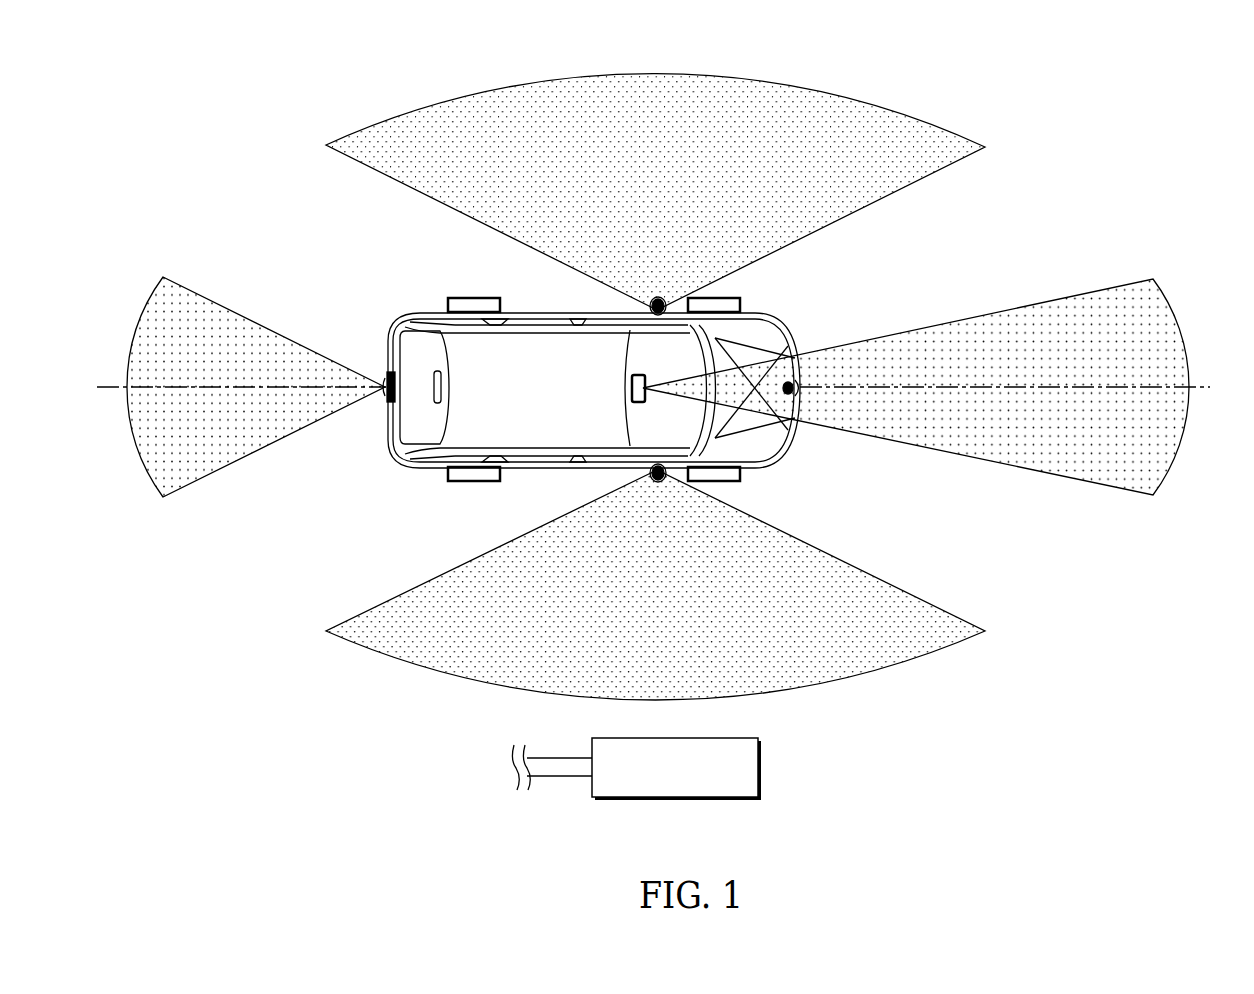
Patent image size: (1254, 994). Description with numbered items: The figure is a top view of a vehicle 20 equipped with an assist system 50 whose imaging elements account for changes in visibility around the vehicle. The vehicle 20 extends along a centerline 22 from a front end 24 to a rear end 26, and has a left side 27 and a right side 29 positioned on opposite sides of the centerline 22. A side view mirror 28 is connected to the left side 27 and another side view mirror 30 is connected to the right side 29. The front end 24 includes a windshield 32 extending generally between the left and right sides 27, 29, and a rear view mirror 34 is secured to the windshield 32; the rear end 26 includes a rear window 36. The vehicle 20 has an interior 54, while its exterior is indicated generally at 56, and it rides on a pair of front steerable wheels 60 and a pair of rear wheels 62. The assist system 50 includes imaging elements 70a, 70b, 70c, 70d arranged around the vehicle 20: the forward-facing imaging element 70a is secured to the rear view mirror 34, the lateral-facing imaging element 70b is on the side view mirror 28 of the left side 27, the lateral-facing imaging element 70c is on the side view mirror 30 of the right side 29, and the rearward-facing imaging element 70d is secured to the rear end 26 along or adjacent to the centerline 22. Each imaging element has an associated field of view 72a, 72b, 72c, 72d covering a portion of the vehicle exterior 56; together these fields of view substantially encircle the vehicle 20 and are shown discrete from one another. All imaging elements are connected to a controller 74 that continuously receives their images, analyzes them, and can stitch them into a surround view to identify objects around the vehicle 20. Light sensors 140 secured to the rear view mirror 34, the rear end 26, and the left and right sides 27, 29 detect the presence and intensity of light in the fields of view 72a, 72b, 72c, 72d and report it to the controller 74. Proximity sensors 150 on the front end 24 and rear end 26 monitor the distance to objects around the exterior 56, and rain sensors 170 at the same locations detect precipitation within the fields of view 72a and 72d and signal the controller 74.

The vehicle 20 is at (438, 270).
The centerline 22 is at (214, 384).
The front end 24 is at (818, 329).
The rear end 26 is at (363, 446).
The left side 27 is at (562, 293).
The side view mirror 28 is at (655, 300).
The right side 29 is at (518, 490).
The side view mirror 30 is at (651, 478).
The windshield 32 is at (668, 436).
The rear view mirror 34 is at (628, 396).
The rear window 36 is at (431, 402).
The assist system 50 is at (894, 249).
The interior 54 is at (500, 359).
The vehicle exterior 56 is at (1006, 571).
The front steerable wheels 60 is at (740, 300).
The rear wheels 62 is at (467, 298).
The imaging element 70a is at (799, 214).
The imaging element 70b is at (665, 306).
The imaging element 70c is at (664, 478).
The imaging element 70d is at (385, 388).
The field of view 72a is at (1022, 423).
The field of view 72b is at (672, 182).
The field of view 72c is at (674, 621).
The field of view 72d is at (244, 422).
The controller 74 is at (762, 770).
The light sensor 140 is at (799, 214).
The proximity sensor 150 is at (805, 398).
The rain sensor 170 is at (668, 308).